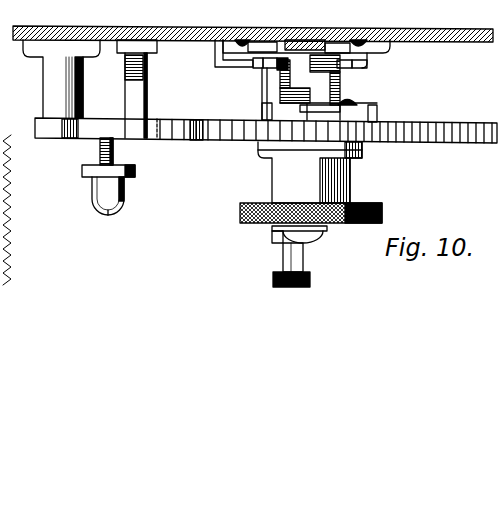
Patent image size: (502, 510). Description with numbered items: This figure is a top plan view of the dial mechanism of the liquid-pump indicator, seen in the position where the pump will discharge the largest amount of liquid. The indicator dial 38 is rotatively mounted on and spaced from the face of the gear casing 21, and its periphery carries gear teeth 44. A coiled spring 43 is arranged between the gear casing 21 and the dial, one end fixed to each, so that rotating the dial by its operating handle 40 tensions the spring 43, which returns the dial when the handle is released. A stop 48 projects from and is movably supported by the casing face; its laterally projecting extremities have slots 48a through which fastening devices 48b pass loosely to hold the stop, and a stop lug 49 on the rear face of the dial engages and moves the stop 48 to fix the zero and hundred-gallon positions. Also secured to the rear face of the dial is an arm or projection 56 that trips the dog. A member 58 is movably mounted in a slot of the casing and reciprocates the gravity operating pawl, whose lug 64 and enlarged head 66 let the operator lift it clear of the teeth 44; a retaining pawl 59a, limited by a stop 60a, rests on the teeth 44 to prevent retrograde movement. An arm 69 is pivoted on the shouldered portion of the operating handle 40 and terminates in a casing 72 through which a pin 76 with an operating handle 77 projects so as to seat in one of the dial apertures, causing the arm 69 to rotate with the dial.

The gear casing 21 is at (444, 38).
The member 58 is at (34, 50).
The stop 60a is at (133, 100).
The retaining pawl 59a is at (153, 140).
The projecting lug 64 is at (100, 152).
The enlarged head 66 is at (125, 193).
The peripheral gear teeth 44 is at (421, 133).
The indicator dial 38 is at (464, 144).
The arm or projection 56 is at (218, 52).
The slot 48a is at (350, 20).
The fastening devices 48b is at (392, 64).
The stop 48 is at (298, 62).
The coiled spring 43 is at (340, 85).
The stop lug 49 is at (313, 108).
The arm 69 is at (350, 171).
The operating handle 40 is at (240, 215).
The casing 72 is at (280, 229).
The pin 76 is at (285, 252).
The operating handle 77 is at (275, 280).